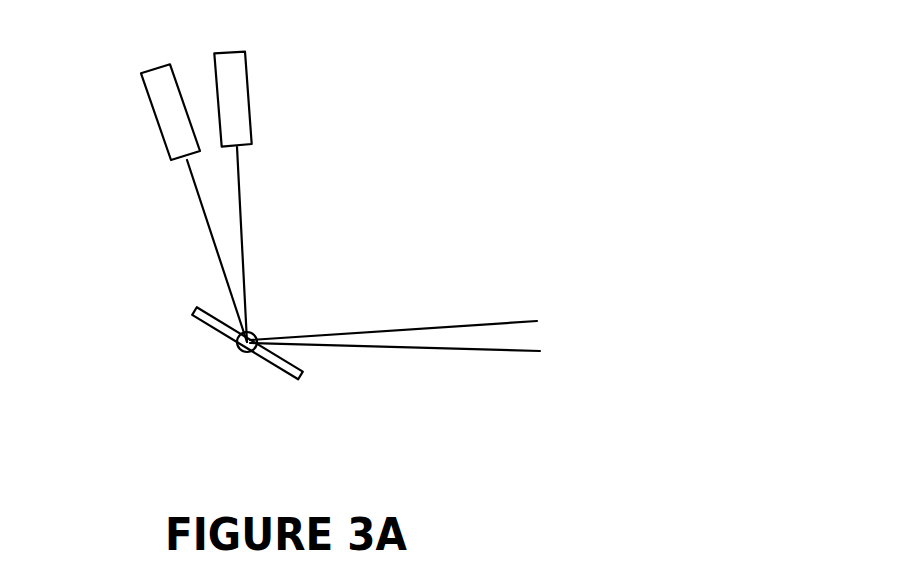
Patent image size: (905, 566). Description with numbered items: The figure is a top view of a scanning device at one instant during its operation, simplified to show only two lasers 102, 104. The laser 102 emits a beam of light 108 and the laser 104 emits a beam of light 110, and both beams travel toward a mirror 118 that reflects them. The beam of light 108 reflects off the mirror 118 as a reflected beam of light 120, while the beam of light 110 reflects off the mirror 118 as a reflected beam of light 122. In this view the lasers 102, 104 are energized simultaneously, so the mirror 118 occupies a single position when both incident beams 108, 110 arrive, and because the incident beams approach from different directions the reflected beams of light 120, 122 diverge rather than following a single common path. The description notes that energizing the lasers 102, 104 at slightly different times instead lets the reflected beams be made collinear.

The laser 102 is at (161, 97).
The laser 104 is at (238, 72).
The beam of light 108 is at (205, 212).
The beam of light 110 is at (245, 240).
The mirror 118 is at (282, 372).
The reflected beam of light 120 is at (243, 352).
The reflected beam of light 122 is at (476, 321).